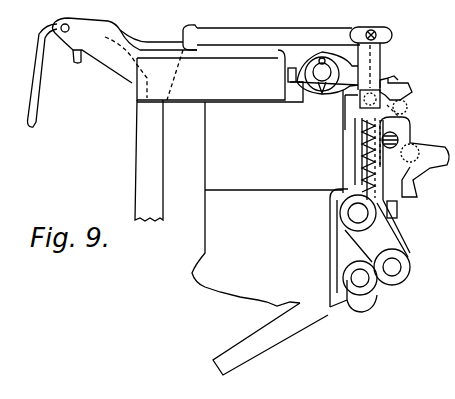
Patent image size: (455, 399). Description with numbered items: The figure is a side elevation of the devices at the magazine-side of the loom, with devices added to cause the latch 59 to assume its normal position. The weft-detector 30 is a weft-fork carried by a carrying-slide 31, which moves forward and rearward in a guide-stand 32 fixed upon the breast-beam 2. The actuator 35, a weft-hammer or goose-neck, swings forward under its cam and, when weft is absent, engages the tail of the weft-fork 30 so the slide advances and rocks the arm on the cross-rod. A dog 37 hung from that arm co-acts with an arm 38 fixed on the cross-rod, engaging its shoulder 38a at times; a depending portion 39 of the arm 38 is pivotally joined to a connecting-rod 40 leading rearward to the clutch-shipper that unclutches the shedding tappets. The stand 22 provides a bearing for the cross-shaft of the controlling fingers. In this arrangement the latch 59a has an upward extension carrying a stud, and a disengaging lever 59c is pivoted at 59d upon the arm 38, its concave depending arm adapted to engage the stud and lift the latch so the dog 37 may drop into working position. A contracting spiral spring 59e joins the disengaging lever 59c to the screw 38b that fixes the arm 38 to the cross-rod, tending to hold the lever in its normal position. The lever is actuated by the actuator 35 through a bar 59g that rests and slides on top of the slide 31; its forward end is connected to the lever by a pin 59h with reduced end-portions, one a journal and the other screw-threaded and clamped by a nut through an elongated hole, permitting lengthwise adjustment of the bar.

The breast-beam 2 is at (213, 150).
The stand 22 is at (396, 286).
The weft-detector 30 is at (34, 97).
The carrying-slide 31 is at (108, 66).
The guide-stand 32 is at (230, 95).
The actuator 35 is at (137, 166).
The dog 37 is at (348, 70).
The arm 38 is at (404, 92).
The shoulder 38a is at (394, 76).
The screw 38b is at (398, 212).
The depending portion 39 is at (340, 253).
The connecting-rod 40 is at (242, 342).
The latch 59 is at (402, 221).
The latch 59a is at (421, 143).
The disengaging lever 59c is at (407, 108).
The pivot 59d is at (348, 102).
The contracting spiral spring 59e is at (357, 160).
The bar 59g is at (222, 33).
The pin 59h is at (398, 17).